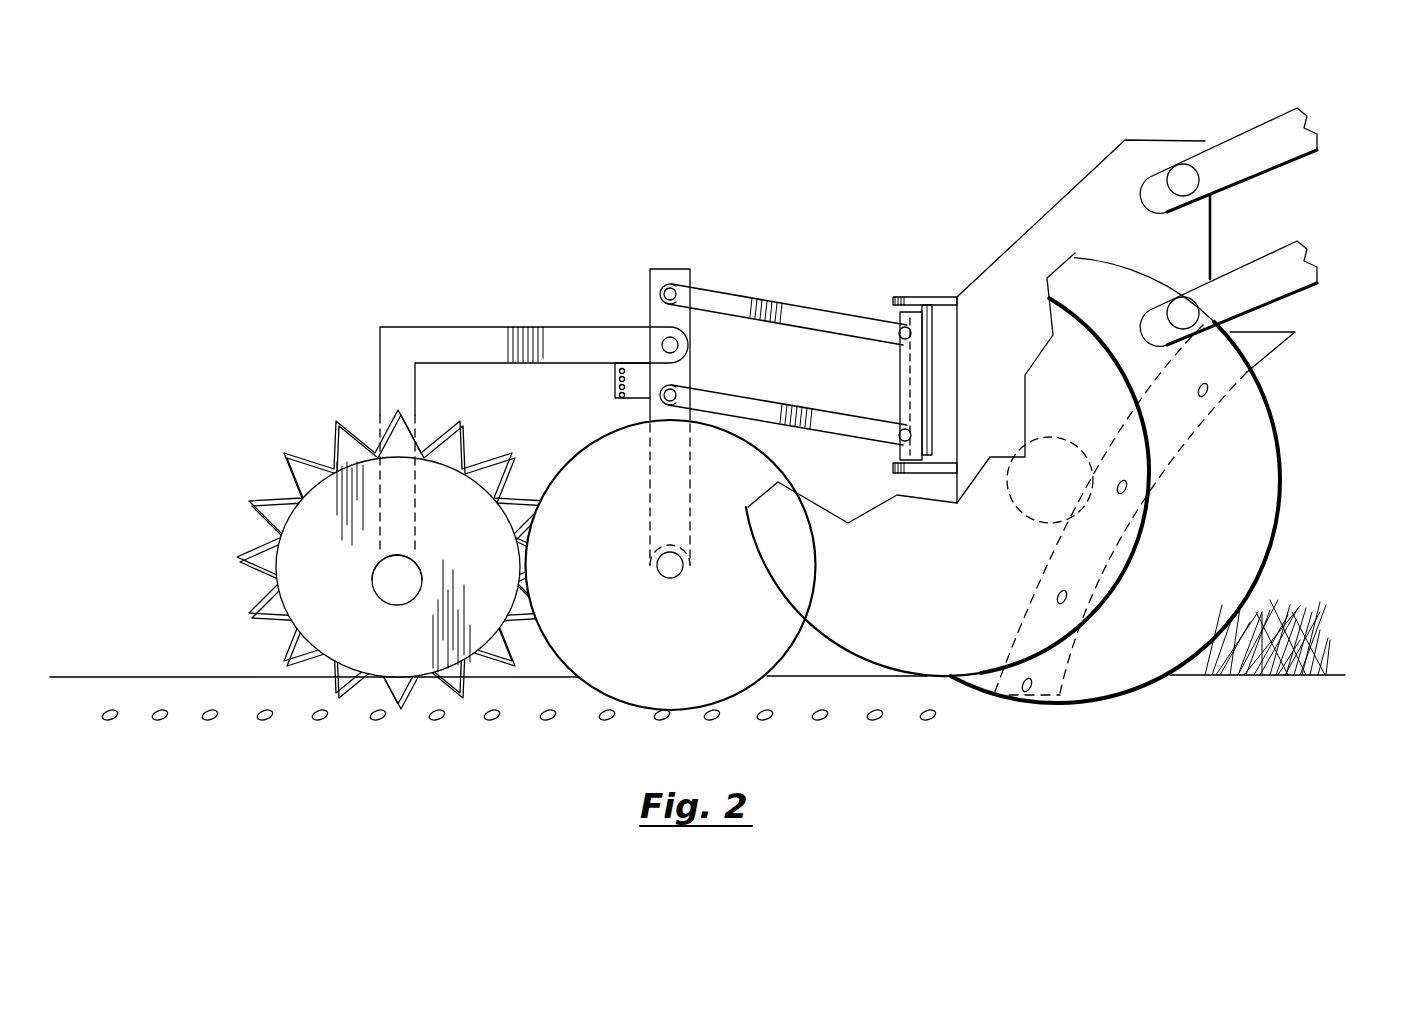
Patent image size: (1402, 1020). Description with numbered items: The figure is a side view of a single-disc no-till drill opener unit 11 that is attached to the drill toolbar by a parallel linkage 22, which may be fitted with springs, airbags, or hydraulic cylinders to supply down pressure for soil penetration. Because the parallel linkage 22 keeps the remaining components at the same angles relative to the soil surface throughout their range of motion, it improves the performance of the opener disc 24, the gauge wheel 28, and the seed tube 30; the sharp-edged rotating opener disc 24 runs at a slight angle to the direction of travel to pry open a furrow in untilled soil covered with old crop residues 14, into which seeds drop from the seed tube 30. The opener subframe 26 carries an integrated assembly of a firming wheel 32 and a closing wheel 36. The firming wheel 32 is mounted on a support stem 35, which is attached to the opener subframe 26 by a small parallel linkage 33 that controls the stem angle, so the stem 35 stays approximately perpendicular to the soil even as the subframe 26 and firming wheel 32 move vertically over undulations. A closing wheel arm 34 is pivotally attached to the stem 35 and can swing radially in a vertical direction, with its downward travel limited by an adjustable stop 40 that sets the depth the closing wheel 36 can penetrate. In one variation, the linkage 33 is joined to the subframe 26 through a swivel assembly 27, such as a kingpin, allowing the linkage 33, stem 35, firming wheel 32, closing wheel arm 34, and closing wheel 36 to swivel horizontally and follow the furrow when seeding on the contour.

The no-till drill opener unit 11 is at (550, 216).
The crop residues 14 is at (1305, 577).
The parallel linkage 22 is at (1226, 158).
The opener disc 24 is at (1153, 640).
The opener subframe 26 is at (1075, 200).
The swivel assembly 27 is at (910, 300).
The gauge wheel 28 is at (912, 632).
The seed tube 30 is at (1258, 345).
The firming wheel 32 is at (613, 450).
The parallel linkage 33 is at (802, 320).
The closing wheel arm 34 is at (455, 343).
The firming wheel stem 35 is at (668, 270).
The closing wheel 36 is at (313, 508).
The adjustable stop 40 is at (634, 372).